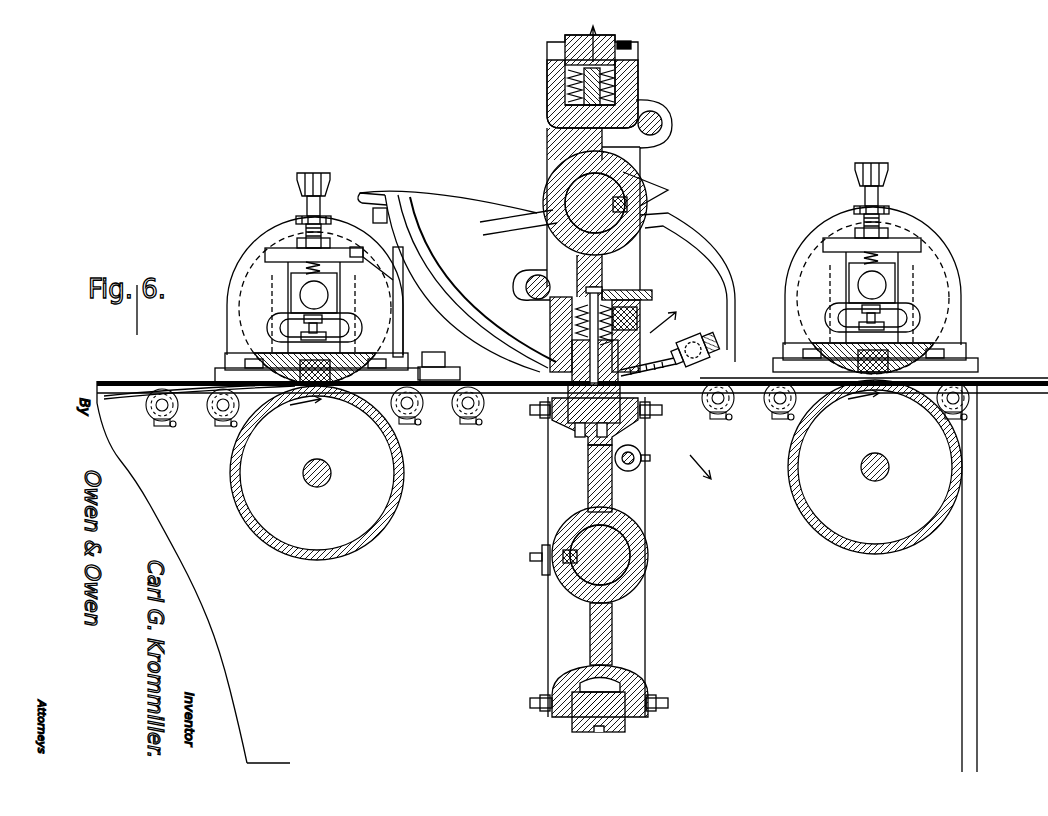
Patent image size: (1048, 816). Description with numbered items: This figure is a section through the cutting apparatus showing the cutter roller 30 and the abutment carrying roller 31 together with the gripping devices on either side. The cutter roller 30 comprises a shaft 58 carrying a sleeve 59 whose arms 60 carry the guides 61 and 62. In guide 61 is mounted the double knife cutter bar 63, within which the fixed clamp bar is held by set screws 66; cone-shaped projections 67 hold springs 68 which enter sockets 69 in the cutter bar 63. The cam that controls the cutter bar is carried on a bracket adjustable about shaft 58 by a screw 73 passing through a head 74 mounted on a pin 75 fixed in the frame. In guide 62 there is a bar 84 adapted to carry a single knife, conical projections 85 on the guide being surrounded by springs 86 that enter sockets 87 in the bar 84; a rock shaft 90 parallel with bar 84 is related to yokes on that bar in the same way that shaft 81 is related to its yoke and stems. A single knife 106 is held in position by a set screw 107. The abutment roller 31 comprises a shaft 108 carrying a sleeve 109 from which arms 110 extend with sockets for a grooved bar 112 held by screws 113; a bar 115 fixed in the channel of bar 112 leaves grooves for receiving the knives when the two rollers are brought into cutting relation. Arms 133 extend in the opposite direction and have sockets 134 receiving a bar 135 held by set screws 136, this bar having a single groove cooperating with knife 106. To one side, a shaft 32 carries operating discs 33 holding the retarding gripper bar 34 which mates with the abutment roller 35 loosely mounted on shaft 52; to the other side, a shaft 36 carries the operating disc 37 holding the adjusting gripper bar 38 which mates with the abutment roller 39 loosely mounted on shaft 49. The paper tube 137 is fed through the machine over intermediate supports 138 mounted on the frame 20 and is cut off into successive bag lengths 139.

The frame 20 is at (180, 542).
The cutter roller 30 is at (523, 259).
The abutment carrying roller 31 is at (558, 618).
The shaft 32 is at (312, 293).
The operating discs 33 is at (306, 278).
The retarding gripper bar 34 is at (327, 360).
The abutment roller 35 is at (317, 488).
The shaft 36 is at (889, 283).
The operating disc 37 is at (879, 268).
The adjusting gripper bar 38 is at (875, 332).
The abutment roller 39 is at (875, 482).
The shaft 49 is at (895, 463).
The shaft 52 is at (332, 468).
The shaft 58 is at (610, 192).
The sleeve 59 is at (626, 174).
The arms 60 is at (590, 137).
The guide 61 is at (556, 320).
The guide 62 is at (636, 74).
The double knife cutter bar 63 is at (570, 351).
The set screws 66 is at (645, 292).
The cone-shaped projections 67 is at (632, 318).
The springs 68 is at (583, 311).
The sockets 69 is at (612, 341).
The screw 73 is at (662, 349).
The head 74 is at (716, 358).
The pin 75 is at (700, 335).
The shaft 81 is at (530, 282).
The bar 84 is at (593, 66).
The conical projections 85 is at (603, 88).
The springs 86 is at (570, 90).
The sockets 87 is at (567, 102).
The rock shaft 90 is at (663, 121).
The single knife 106 is at (595, 33).
The set screw 107 is at (632, 44).
The shaft 108 is at (620, 562).
The sleeve 109 is at (633, 553).
The arms 110 is at (590, 483).
The grooved bar 112 is at (580, 437).
The screws 113 is at (536, 414).
The bar 115 is at (612, 387).
The arms 133 is at (604, 641).
The sockets 134 is at (625, 693).
The bar 135 is at (582, 726).
The set screws 136 is at (532, 704).
The paper tube 137 is at (112, 388).
The intermediate supports 138 is at (201, 396).
The bag lengths 139 is at (1000, 375).